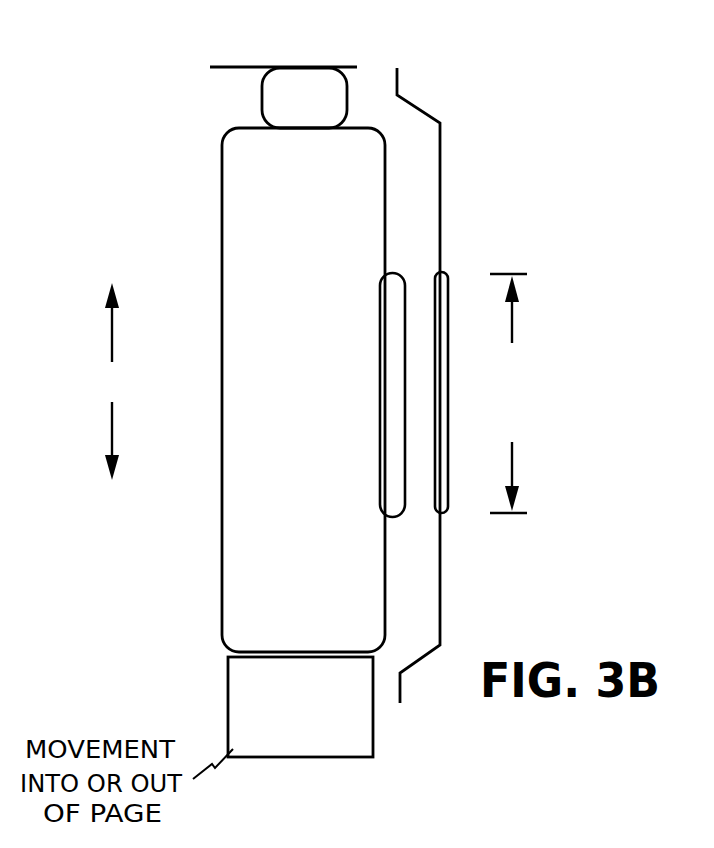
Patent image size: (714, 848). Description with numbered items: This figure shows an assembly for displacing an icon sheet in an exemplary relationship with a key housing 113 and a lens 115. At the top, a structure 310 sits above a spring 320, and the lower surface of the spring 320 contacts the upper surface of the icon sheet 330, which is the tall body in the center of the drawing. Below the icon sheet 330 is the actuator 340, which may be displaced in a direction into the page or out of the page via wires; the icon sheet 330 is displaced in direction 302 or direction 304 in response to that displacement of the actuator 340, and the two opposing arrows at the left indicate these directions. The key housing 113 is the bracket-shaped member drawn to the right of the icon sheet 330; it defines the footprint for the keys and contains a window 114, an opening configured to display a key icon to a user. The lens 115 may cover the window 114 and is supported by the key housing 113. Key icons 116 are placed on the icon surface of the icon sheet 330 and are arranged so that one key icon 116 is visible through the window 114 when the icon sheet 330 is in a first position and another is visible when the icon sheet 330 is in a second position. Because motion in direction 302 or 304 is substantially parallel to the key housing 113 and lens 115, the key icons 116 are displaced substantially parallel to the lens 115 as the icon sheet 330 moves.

The structure 310 is at (283, 39).
The spring 320 is at (304, 98).
The icon sheet 330 is at (303, 390).
The actuator 340 is at (300, 707).
The key housing 113 is at (455, 385).
The window 114 is at (511, 393).
The lens 115 is at (474, 369).
The key icon 116 is at (345, 395).
The direction 302 is at (83, 322).
The direction 304 is at (83, 441).